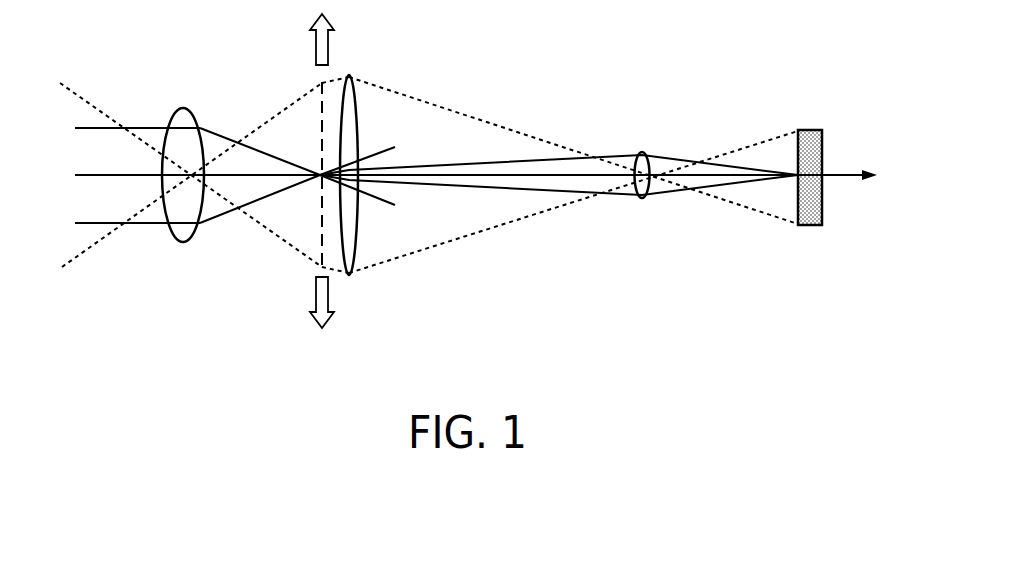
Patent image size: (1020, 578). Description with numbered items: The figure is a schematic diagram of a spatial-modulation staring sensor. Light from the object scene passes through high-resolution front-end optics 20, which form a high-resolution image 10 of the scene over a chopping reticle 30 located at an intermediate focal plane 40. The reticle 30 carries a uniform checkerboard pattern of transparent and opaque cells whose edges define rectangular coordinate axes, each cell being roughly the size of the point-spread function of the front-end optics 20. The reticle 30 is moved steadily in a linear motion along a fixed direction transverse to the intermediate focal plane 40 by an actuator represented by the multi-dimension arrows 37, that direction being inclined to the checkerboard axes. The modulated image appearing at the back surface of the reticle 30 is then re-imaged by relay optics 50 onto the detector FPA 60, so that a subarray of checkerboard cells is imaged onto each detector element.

The high-resolution image 10 is at (310, 160).
The high-resolution front-end optics 20 is at (179, 105).
The chopping reticle 30 is at (317, 100).
The multi-dimension arrows 37 is at (328, 47).
The intermediate focal plane 40 is at (320, 233).
The relay optics 50 is at (639, 152).
The detector FPA 60 is at (795, 197).